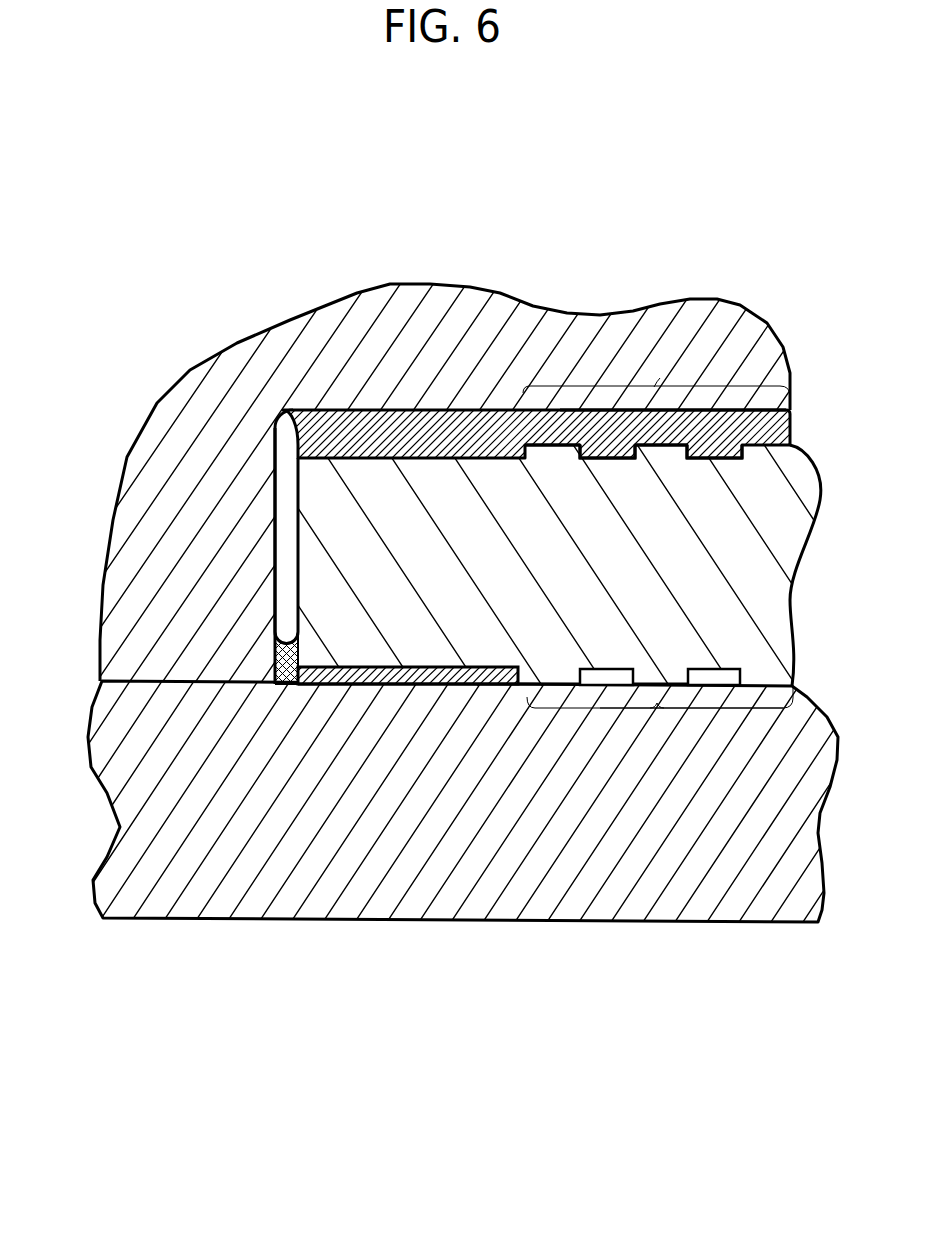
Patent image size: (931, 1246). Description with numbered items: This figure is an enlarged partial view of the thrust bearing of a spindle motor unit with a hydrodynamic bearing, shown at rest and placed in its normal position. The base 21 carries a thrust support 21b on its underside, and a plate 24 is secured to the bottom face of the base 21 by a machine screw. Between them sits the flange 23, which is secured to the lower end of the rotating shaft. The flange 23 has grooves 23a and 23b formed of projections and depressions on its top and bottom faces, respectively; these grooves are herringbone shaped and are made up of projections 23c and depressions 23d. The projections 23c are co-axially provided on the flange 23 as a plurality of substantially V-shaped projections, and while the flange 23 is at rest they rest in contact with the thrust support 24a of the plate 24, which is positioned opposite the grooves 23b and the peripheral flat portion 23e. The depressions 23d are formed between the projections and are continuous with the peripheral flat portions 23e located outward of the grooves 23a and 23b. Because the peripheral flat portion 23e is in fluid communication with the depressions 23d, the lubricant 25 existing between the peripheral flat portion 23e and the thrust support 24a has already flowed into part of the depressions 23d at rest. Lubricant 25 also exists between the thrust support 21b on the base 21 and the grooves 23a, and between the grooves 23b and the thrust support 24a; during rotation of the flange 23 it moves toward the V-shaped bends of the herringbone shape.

The base 21 is at (290, 335).
The thrust support 21b is at (410, 420).
The flange 23 is at (455, 513).
The groove 23a is at (640, 410).
The groove 23b is at (657, 710).
The projection 23c is at (548, 453).
The depression 23d is at (597, 460).
The peripheral flat portion 23e is at (403, 684).
The plate 24 is at (225, 885).
The thrust support 24a is at (327, 667).
The lubricant 25 is at (280, 655).